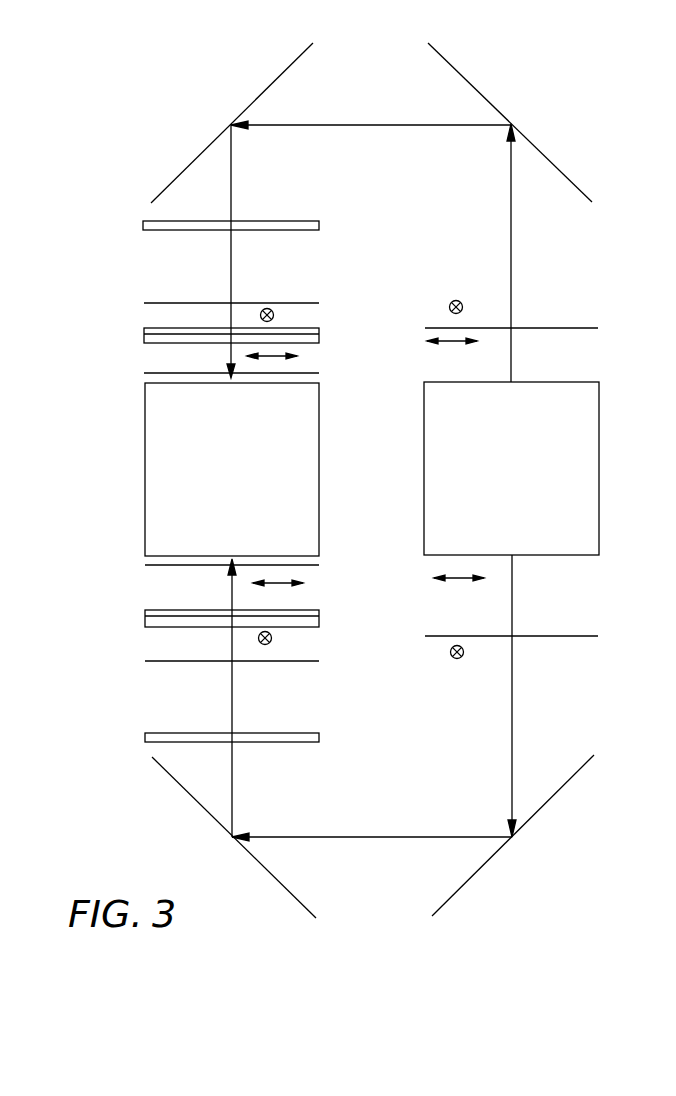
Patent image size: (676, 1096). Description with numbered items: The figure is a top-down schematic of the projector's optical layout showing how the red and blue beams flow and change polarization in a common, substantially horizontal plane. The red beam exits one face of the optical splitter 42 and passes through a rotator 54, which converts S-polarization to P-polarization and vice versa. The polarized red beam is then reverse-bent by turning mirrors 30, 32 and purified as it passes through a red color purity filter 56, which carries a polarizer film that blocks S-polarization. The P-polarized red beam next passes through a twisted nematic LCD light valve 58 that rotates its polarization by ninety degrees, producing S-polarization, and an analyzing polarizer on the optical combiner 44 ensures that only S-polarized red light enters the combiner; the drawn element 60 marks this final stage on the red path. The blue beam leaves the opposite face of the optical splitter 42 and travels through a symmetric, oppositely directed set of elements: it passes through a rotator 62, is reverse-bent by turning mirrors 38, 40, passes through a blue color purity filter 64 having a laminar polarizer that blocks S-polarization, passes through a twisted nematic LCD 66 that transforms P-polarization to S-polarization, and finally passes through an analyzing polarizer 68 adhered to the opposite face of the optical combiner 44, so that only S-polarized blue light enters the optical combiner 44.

The turning mirror 30 is at (543, 803).
The turning mirror 32 is at (203, 811).
The turning mirror 38 is at (543, 153).
The turning mirror 40 is at (207, 148).
The optical splitter 42 is at (599, 423).
The optical combiner 44 is at (319, 424).
The rotator 54 is at (582, 636).
The red color purity filter 56 is at (300, 733).
The twisted nematic LCD light valve 58 is at (310, 610).
The red beam entry plane 60 is at (168, 567).
The rotator 62 is at (580, 328).
The blue color purity filter 64 is at (300, 220).
The twisted nematic LCD 66 is at (310, 328).
The analyzing polarizer 68 is at (310, 373).